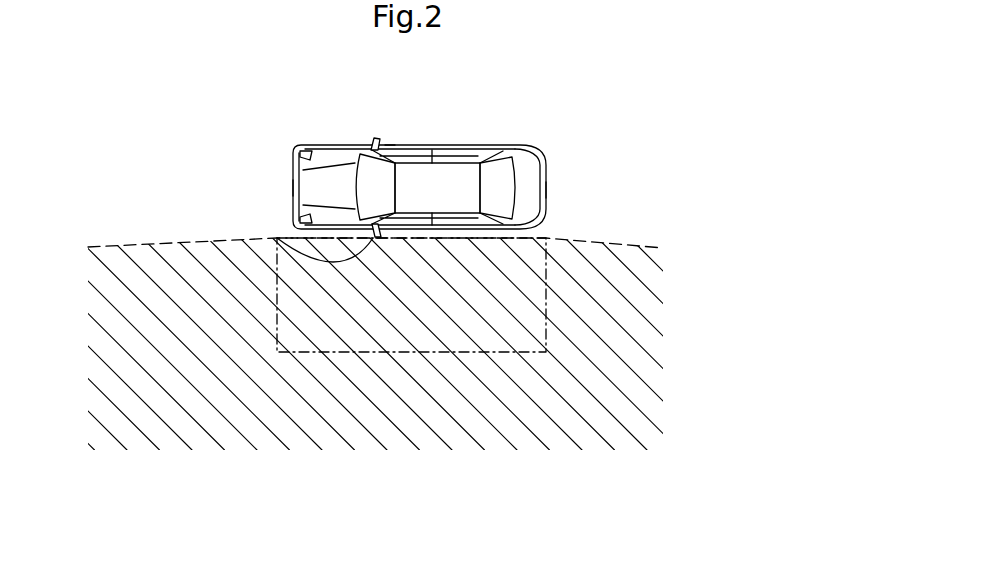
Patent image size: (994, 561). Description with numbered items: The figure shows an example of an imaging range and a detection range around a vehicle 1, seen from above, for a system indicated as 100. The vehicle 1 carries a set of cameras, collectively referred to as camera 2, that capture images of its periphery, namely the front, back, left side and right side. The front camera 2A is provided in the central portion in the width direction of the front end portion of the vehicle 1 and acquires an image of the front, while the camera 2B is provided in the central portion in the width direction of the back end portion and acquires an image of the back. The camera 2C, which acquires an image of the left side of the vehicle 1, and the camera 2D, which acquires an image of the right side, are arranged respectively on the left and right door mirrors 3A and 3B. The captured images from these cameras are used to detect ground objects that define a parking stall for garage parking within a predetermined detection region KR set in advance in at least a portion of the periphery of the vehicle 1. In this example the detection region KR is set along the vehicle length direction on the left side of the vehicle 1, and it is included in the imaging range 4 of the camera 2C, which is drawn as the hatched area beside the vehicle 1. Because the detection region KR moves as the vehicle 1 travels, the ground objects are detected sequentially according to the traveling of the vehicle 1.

The vehicle 1 is at (476, 171).
The driving assistance system 100 is at (525, 147).
The camera 2 is at (423, 170).
The front camera 2A is at (292, 188).
The camera 2B is at (545, 190).
The camera 2C is at (277, 238).
The camera 2D is at (384, 149).
The left door mirror 3A is at (378, 238).
The right door mirror 3B is at (375, 145).
The imaging range 4 is at (607, 362).
The detection region KR is at (374, 353).